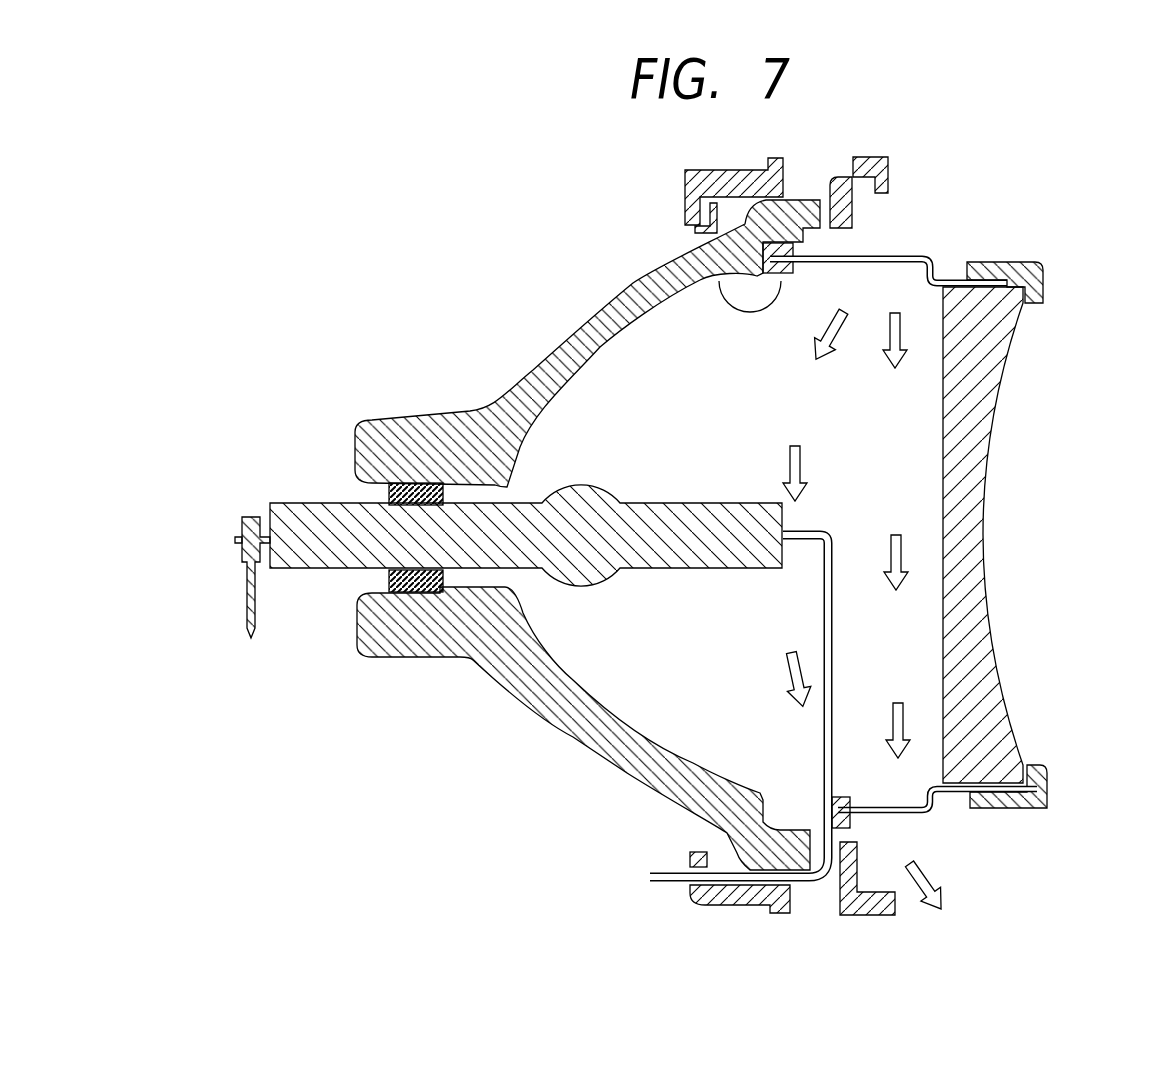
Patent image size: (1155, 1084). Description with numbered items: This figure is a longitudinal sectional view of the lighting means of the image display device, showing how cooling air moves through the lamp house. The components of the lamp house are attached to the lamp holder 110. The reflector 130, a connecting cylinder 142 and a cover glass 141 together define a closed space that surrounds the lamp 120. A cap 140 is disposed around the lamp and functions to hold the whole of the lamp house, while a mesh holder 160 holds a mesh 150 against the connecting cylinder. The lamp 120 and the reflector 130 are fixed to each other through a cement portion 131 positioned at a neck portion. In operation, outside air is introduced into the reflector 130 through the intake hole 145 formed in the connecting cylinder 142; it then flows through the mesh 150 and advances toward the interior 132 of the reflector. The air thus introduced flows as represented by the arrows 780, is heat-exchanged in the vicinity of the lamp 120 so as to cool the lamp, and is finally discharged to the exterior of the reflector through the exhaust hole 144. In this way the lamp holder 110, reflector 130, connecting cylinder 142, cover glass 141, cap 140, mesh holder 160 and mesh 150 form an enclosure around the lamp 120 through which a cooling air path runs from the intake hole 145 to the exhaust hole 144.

The lamp holder 110 is at (722, 908).
The lamp 120 is at (652, 527).
The reflector 130 is at (481, 627).
The cement portion 131 is at (410, 594).
The interior of the reflector 132 is at (668, 683).
The cap 140 is at (1043, 283).
The cover glass 141 is at (1000, 690).
The connecting cylinder 142 is at (933, 268).
The exhaust hole 144 is at (885, 822).
The intake hole 145 is at (875, 256).
The mesh 150 is at (877, 810).
The mesh holder 160 is at (680, 264).
The arrows 780 is at (783, 448).